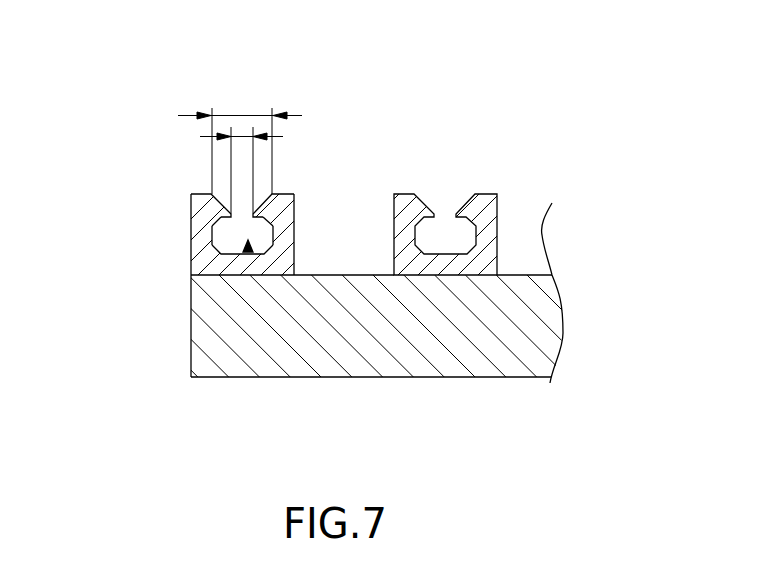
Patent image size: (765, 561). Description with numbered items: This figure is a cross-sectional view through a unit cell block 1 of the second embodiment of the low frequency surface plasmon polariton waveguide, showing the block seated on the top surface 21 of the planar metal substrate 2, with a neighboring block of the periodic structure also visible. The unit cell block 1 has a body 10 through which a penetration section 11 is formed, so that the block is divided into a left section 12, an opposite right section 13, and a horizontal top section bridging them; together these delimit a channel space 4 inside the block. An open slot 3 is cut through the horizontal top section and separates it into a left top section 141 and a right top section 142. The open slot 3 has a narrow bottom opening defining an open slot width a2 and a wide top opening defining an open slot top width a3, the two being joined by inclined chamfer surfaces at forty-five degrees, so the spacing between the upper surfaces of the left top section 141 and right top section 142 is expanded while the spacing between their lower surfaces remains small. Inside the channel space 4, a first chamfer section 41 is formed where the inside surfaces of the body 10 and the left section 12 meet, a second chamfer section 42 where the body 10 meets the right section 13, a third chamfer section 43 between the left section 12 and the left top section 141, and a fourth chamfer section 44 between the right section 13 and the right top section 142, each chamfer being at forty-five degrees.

The unit cell block 1 is at (292, 152).
The planar metal substrate 2 is at (473, 360).
The open slot 3 is at (263, 196).
The channel space 4 is at (248, 253).
The body 10 is at (236, 270).
The penetration section 11 is at (291, 227).
The left section 12 is at (193, 243).
The right section 13 is at (276, 243).
The top surface 21 is at (515, 275).
The first chamfer section 41 is at (218, 252).
The second chamfer section 42 is at (270, 253).
The third chamfer section 43 is at (214, 221).
The fourth chamfer section 44 is at (273, 220).
The left top section 141 is at (204, 200).
The right top section 142 is at (282, 203).
The open slot width a2 is at (236, 152).
The open slot top width a3 is at (222, 115).